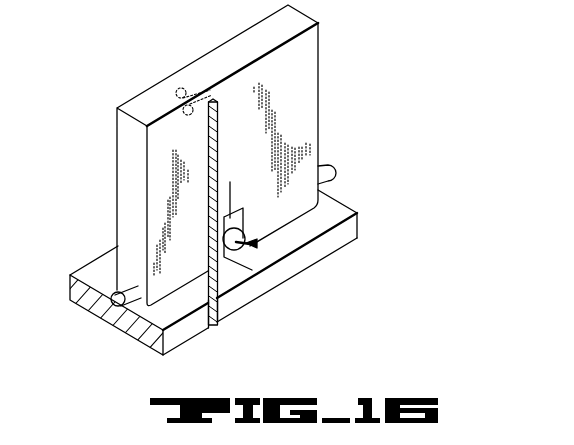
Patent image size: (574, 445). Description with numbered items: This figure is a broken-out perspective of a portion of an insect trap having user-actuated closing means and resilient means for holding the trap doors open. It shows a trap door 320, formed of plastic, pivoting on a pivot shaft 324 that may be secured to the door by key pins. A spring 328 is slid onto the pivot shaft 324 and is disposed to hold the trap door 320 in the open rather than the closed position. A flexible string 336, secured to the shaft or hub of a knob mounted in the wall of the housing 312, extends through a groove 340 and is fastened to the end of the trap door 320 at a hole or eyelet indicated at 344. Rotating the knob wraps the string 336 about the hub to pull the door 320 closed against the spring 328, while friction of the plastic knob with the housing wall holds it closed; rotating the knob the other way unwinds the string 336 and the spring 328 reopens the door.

The housing 312 is at (93, 262).
The trap door 320 is at (314, 77).
The pivot shaft 324 is at (332, 172).
The spring 328 is at (257, 245).
The flexible string 336 is at (219, 144).
The groove 340 is at (213, 323).
The hole or eyelet 344 is at (207, 93).